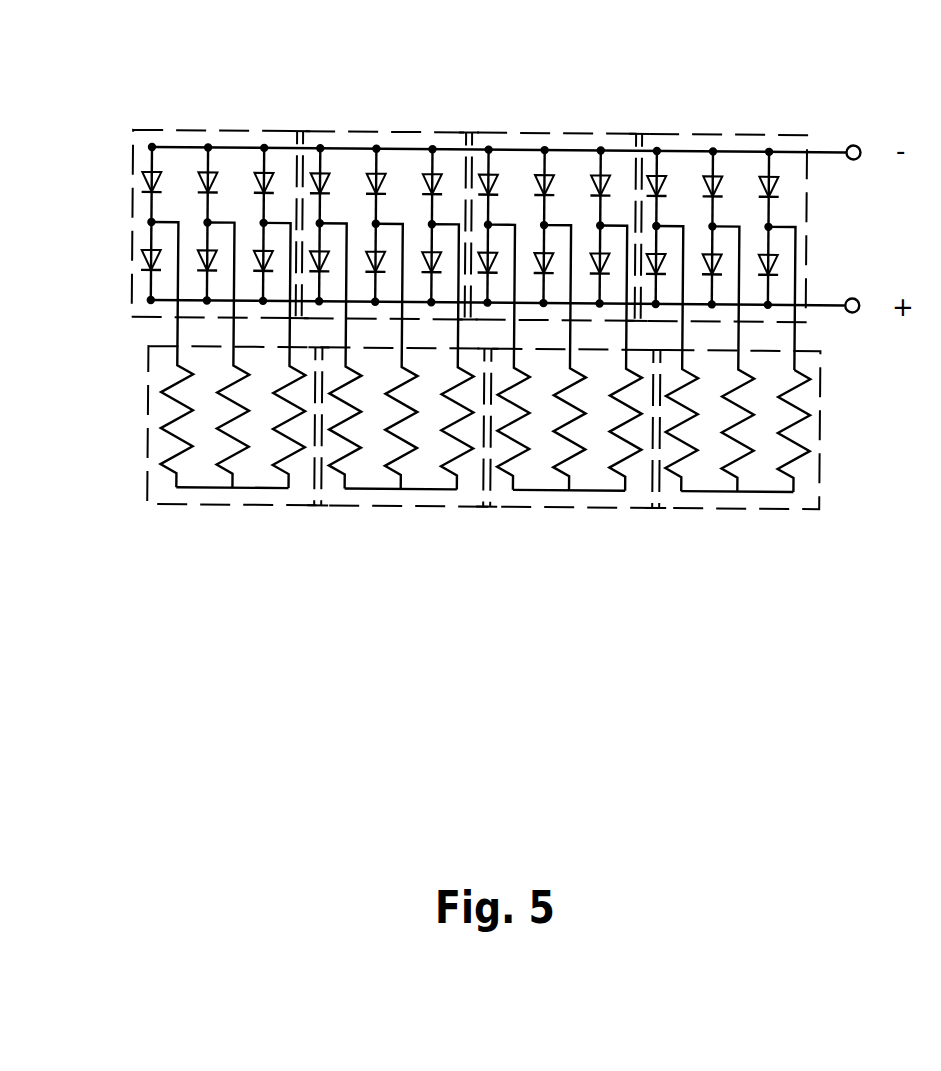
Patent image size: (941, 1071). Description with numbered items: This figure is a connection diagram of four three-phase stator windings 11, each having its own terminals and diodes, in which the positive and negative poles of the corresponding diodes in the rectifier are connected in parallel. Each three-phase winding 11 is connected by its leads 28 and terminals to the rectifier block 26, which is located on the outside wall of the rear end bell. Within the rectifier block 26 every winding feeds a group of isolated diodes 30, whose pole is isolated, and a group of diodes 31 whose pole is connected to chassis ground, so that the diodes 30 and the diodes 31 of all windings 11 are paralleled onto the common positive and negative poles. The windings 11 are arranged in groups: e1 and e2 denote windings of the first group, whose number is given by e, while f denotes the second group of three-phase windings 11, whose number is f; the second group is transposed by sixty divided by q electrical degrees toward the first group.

The rectifier block 26 is at (472, 183).
The isolated diodes 30 is at (833, 121).
The leads of three-phase windings 28 is at (843, 274).
The chassis-ground-connected diodes 31 is at (840, 263).
The three-phase winding 11 is at (849, 437).
The first group three-phase windings e1 is at (218, 558).
The second group three-phase windings f is at (577, 507).
The first group three-phase windings e2 is at (725, 563).